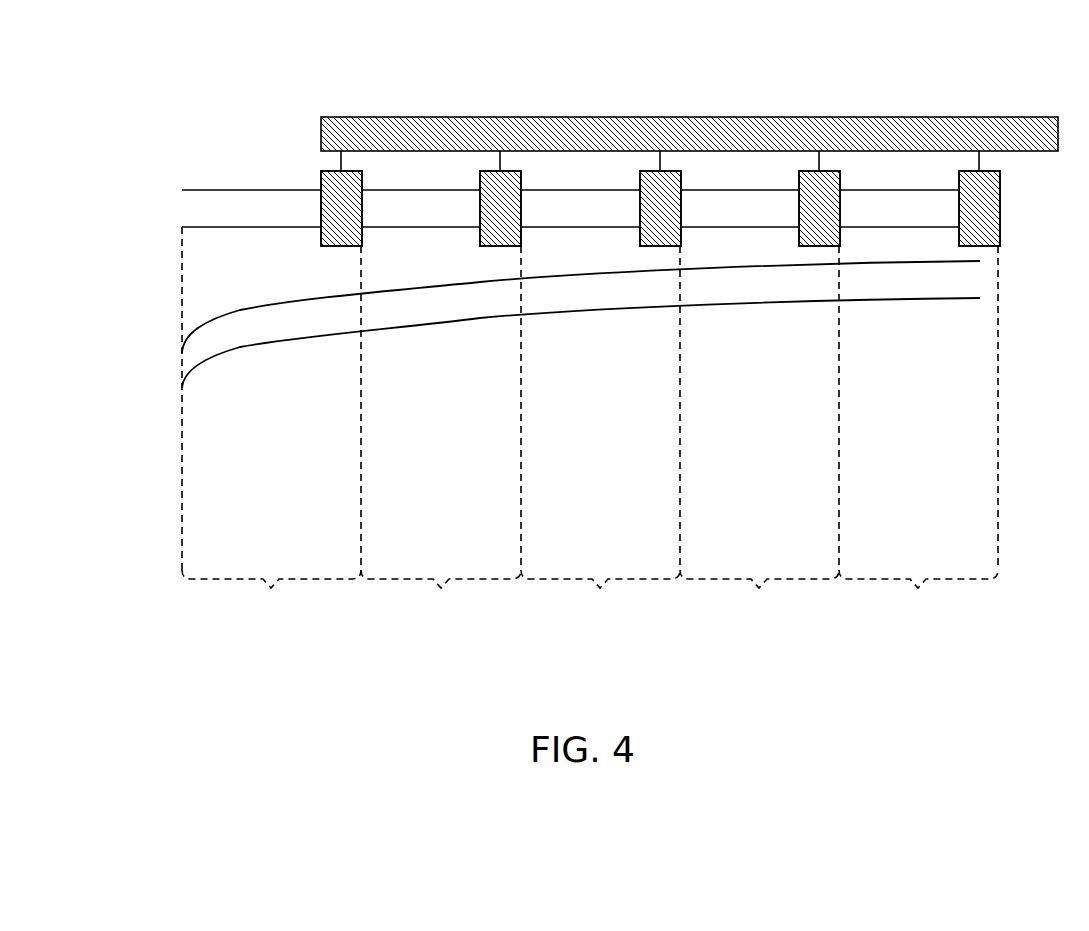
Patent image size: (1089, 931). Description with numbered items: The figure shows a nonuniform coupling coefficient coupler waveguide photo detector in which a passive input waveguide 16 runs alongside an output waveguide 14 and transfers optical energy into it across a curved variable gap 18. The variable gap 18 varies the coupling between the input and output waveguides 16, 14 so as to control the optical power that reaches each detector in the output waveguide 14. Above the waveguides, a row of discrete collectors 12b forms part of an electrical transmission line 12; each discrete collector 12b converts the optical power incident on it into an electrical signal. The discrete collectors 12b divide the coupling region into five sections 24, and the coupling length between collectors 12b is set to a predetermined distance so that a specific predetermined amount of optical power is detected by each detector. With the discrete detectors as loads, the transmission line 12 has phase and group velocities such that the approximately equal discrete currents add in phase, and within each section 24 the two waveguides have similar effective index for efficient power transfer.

The transmission line 12 is at (924, 131).
The discrete collectors 12b is at (506, 214).
The output waveguide 14 is at (216, 186).
The input waveguide 16 is at (260, 335).
The variable gap 18 is at (398, 264).
The sections 24 is at (590, 431).